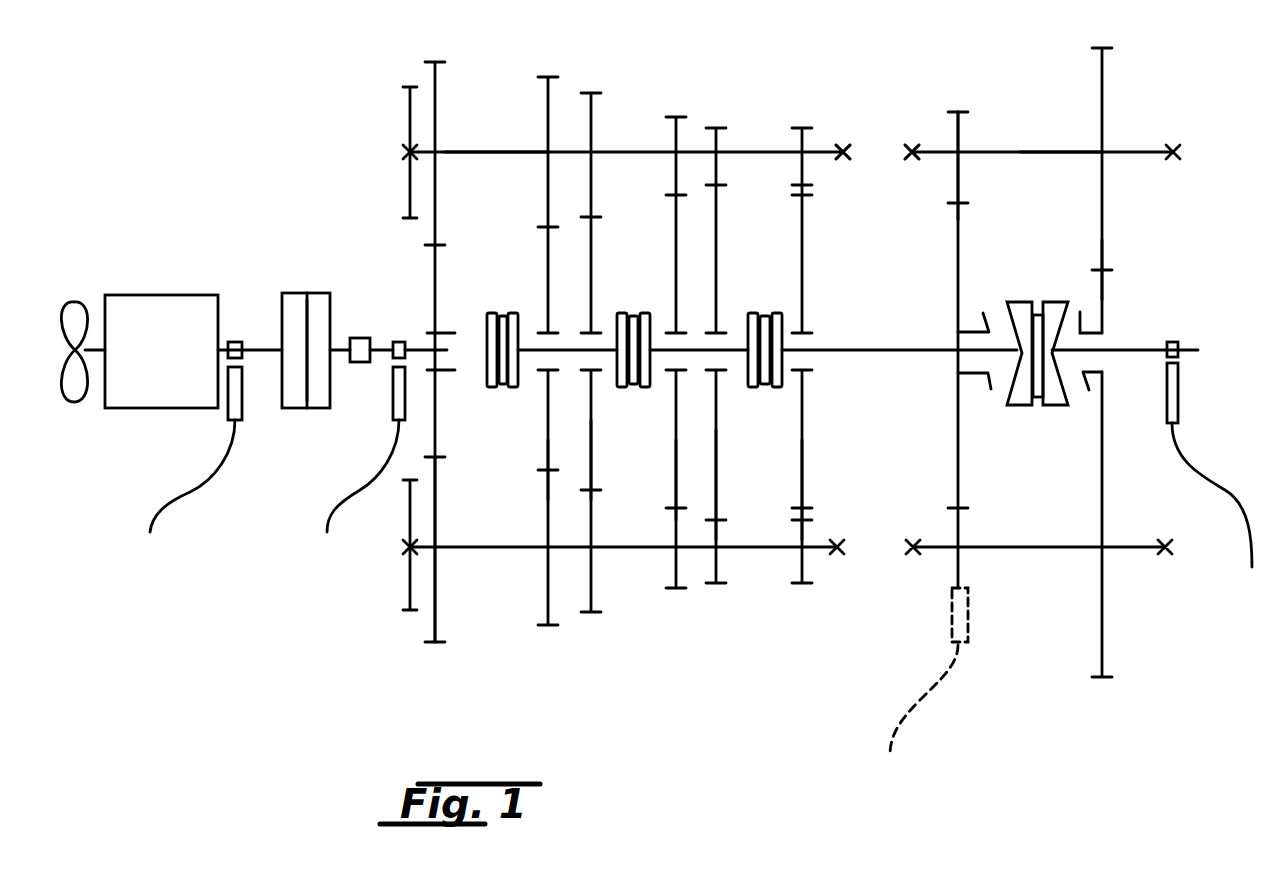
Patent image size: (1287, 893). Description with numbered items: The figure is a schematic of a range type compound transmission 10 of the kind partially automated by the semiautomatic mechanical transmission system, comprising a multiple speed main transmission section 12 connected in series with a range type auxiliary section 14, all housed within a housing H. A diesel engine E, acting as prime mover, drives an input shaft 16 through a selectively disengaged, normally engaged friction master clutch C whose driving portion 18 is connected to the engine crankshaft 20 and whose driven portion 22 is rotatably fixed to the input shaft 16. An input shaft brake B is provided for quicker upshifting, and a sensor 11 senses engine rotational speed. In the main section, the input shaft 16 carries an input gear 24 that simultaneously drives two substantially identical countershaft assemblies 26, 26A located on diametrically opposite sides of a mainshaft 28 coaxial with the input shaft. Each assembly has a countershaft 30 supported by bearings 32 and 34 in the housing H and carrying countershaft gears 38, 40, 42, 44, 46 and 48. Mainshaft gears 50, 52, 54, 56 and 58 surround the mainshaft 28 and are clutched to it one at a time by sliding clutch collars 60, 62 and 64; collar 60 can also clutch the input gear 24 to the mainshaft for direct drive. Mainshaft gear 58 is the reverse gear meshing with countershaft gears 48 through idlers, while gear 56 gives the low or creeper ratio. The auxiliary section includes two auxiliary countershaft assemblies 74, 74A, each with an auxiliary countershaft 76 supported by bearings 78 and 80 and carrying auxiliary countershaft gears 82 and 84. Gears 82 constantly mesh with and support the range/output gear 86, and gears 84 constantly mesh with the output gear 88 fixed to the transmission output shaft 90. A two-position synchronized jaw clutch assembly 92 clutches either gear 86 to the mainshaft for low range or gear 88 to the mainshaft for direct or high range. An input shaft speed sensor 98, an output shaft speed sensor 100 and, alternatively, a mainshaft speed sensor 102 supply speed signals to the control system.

The range type compound transmission 10 is at (872, 145).
The engine speed sensor 11 is at (156, 500).
The main transmission section 12 is at (622, 130).
The range type auxiliary section 14 is at (1002, 135).
The input shaft 16 is at (398, 340).
The input or driving portion 18 is at (288, 396).
The engine crankshaft 20 is at (254, 340).
The driven portion 22 is at (320, 402).
The input gear 24 is at (437, 285).
The countershaft assembly 26 is at (468, 150).
The countershaft assembly 26A is at (502, 550).
The mainshaft 28 is at (937, 362).
The countershaft 30 is at (502, 158).
The bearing 32 is at (404, 548).
The bearing 34 is at (842, 553).
The countershaft gear 38 is at (438, 630).
The countershaft gear 40 is at (547, 612).
The countershaft gear 42 is at (594, 596).
The countershaft gear 44 is at (677, 578).
The countershaft gear 46 is at (718, 568).
The countershaft gear 48 is at (800, 568).
The mainshaft gear 50 is at (546, 455).
The mainshaft gear 52 is at (594, 425).
The mainshaft gear 54 is at (677, 468).
The mainshaft drive gear 56 is at (727, 452).
The reverse gear 58 is at (800, 472).
The sliding clutch collar 60 is at (489, 388).
The sliding clutch collar 62 is at (656, 311).
The sliding clutch collar 64 is at (757, 311).
The auxiliary countershaft assembly 74 is at (1022, 150).
The auxiliary countershaft assembly 74A is at (1047, 555).
The auxiliary countershaft 76 is at (1075, 158).
The bearing 78 is at (920, 162).
The bearing 80 is at (1181, 152).
The auxiliary section countershaft gear 82 is at (962, 124).
The auxiliary section countershaft gear 84 is at (1105, 100).
The range/output gear 86 is at (955, 290).
The output gear 88 is at (1074, 266).
The transmission output shaft 90 is at (1138, 347).
The two-position synchronized jaw clutch assembly 92 is at (1016, 412).
The input shaft speed sensor 98 is at (392, 395).
The output shaft speed sensor 100 is at (1180, 397).
The mainshaft speed sensor 102 is at (950, 616).
The diesel engine E is at (139, 351).
The friction master clutch C is at (308, 289).
The input shaft brake B is at (355, 330).
The housing H is at (408, 115).